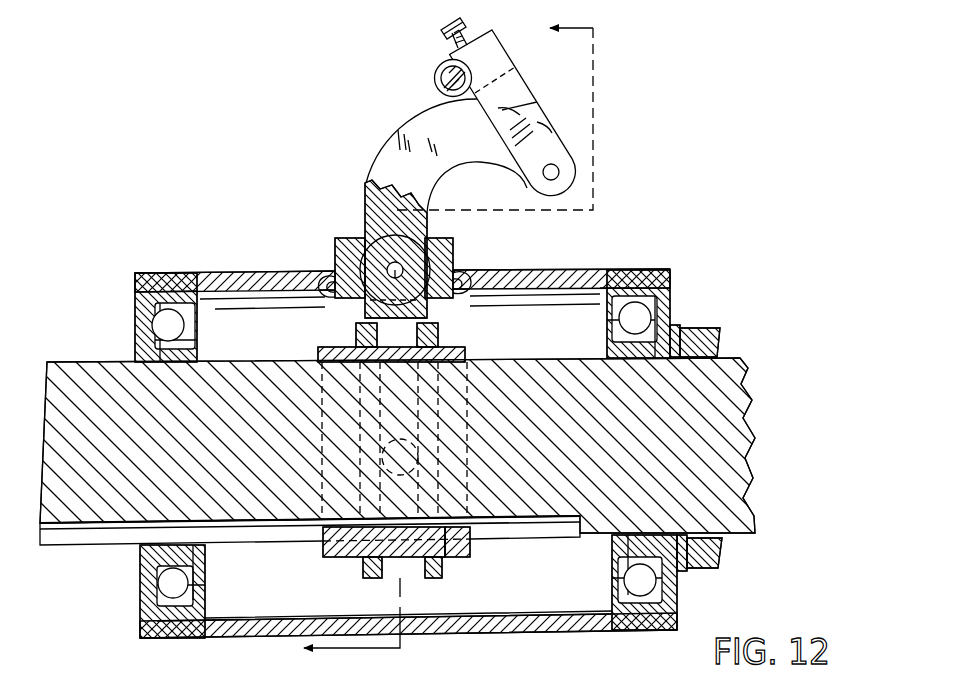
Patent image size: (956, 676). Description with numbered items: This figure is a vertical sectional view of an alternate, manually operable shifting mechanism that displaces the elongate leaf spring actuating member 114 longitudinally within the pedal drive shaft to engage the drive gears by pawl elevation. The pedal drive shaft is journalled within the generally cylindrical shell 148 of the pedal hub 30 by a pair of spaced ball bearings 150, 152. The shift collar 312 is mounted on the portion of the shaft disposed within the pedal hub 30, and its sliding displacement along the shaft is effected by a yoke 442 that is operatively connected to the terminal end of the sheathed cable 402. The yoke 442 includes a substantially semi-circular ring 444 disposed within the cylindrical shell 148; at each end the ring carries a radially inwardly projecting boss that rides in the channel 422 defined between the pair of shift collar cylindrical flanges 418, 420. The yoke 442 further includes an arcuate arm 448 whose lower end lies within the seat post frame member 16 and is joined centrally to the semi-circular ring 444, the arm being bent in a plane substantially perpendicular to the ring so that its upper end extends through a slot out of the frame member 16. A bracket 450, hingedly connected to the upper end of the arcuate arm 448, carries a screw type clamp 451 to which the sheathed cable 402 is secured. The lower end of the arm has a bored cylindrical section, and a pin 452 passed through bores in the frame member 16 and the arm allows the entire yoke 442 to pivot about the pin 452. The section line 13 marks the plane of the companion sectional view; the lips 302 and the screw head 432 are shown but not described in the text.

The section line 13- 13 is at (433, 344).
The seat post frame member 16 is at (336, 246).
The pedal hub 30 is at (207, 265).
The elongate leaf spring actuating member 114 is at (120, 538).
The generally cylindrical shell 148 is at (195, 640).
The ball bearing 150 is at (640, 312).
The ball bearing 152 is at (160, 318).
The seal lips 302 is at (323, 286).
The shift collar 312 is at (316, 350).
The sheathed cable 402 is at (459, 49).
The shift collar cylindrical flange 418 is at (362, 569).
The shift collar cylindrical flange 420 is at (434, 578).
The channel 422 is at (397, 572).
The screw head 432 is at (441, 27).
The yoke 442 is at (361, 181).
The semi-circular ring 444 is at (441, 334).
The arcuate arm 448 is at (412, 136).
The bracket 450 is at (527, 82).
The screw type clamp 451 is at (437, 88).
The pin 452 is at (428, 240).